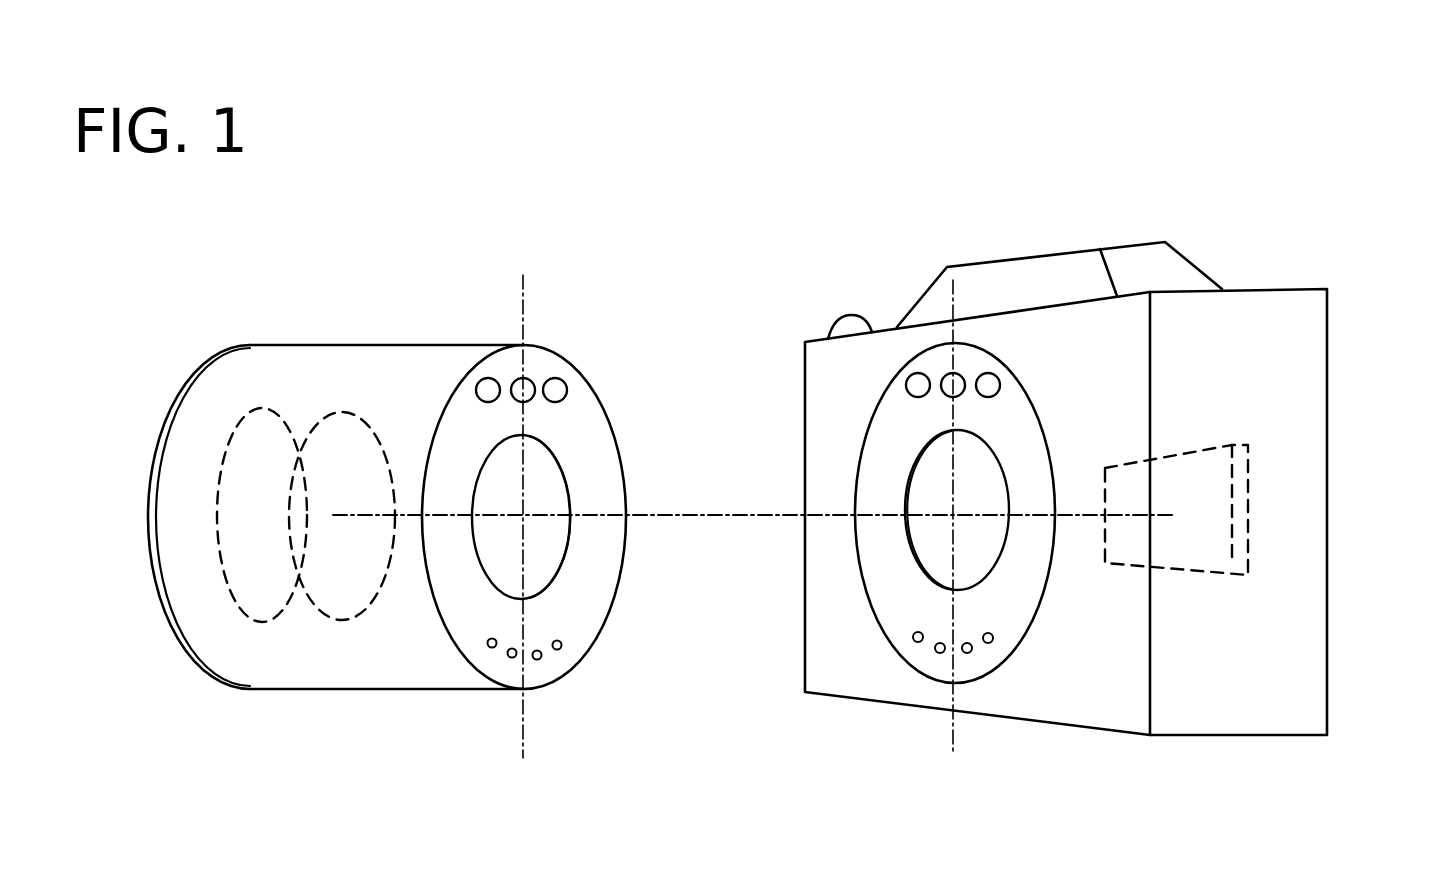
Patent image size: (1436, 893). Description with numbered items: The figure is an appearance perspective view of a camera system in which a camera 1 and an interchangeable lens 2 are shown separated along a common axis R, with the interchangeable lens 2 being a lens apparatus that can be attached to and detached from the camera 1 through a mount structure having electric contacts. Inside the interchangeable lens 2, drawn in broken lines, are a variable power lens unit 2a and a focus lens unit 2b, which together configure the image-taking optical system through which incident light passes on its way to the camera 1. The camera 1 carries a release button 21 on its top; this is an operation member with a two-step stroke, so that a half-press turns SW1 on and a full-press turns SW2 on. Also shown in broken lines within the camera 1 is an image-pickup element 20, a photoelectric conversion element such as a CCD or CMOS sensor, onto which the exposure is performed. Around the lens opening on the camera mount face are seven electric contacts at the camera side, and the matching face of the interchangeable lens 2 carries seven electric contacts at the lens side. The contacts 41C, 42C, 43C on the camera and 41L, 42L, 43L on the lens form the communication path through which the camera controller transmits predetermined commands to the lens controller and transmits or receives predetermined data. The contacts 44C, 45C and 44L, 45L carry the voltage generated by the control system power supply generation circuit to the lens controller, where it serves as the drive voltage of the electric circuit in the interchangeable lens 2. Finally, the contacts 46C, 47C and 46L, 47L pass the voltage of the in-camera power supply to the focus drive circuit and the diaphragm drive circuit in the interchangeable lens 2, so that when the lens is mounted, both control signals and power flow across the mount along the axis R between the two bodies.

The camera 1 is at (1264, 298).
The interchangeable lens 2 is at (358, 356).
The variable power lens unit 2a is at (243, 608).
The focus lens unit 2b is at (322, 610).
The image-pickup element 20 is at (1243, 446).
The release button 21 is at (850, 313).
The electric contact at the lens side 41L is at (562, 379).
The electric contact at the lens side 42L is at (527, 378).
The electric contact at the lens side 43L is at (488, 378).
The electric contact at the lens side 44L is at (562, 646).
The electric contact at the lens side 45L is at (540, 659).
The electric contact at the lens side 46L is at (511, 658).
The electric contact at the lens side 47L is at (488, 645).
The electric contact at the camera side 41C is at (905, 393).
The electric contact at the camera side 42C is at (946, 377).
The electric contact at the camera side 43C is at (990, 373).
The electric contact at the camera side 44C is at (916, 642).
The electric contact at the camera side 45C is at (939, 653).
The electric contact at the camera side 46C is at (966, 653).
The electric contact at the camera side 47C is at (988, 643).
The optical axis R is at (716, 513).